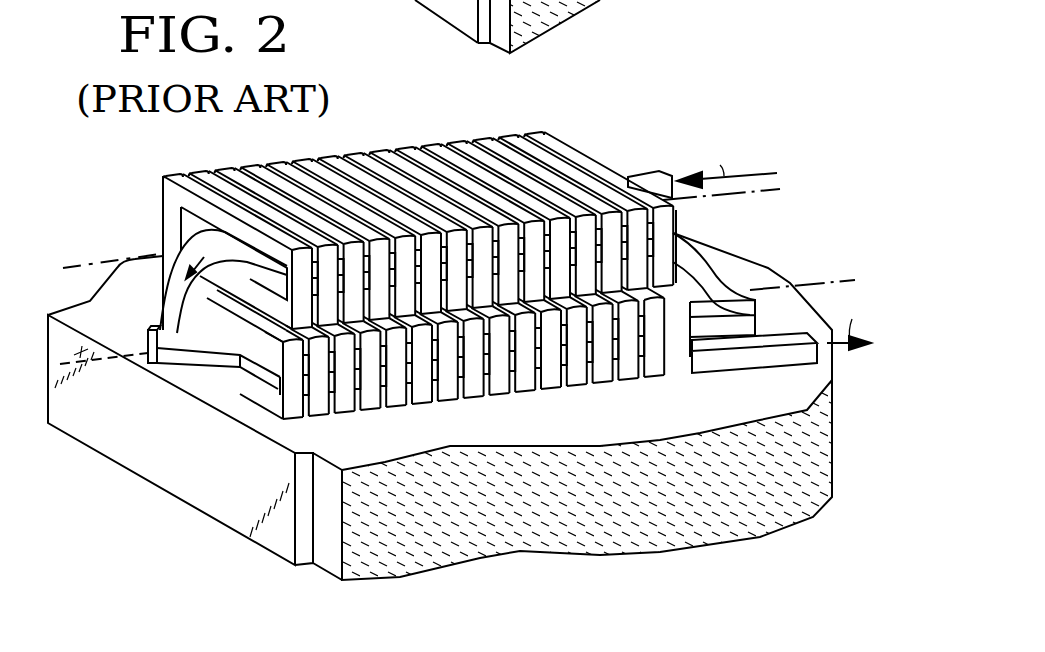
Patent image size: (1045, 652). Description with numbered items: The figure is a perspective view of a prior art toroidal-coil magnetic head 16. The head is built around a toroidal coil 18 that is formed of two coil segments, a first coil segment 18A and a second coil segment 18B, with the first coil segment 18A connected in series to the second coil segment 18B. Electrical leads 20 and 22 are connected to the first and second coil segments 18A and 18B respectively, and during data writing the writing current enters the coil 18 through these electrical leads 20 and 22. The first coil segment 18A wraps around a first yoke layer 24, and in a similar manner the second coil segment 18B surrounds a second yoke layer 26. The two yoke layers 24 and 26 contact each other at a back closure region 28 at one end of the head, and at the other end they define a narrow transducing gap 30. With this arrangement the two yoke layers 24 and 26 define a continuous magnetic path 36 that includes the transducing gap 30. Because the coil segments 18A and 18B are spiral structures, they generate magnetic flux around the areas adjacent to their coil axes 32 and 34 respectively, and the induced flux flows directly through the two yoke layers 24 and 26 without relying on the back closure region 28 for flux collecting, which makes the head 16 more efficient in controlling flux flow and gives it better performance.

The magnetic head 16 is at (604, 113).
The toroidal coil 18 is at (455, 128).
The first coil segment 18A is at (505, 400).
The second coil segment 18B is at (163, 194).
The electrical lead 20 is at (787, 370).
The electrical lead 22 is at (644, 170).
The first yoke layer 24 is at (207, 360).
The second yoke layer 26 is at (185, 289).
The back closure region 28 is at (740, 288).
The transducing gap 30 is at (148, 344).
The coil axis 32 is at (103, 262).
The coil axis 34 is at (105, 360).
The continuous magnetic path 36 is at (207, 240).